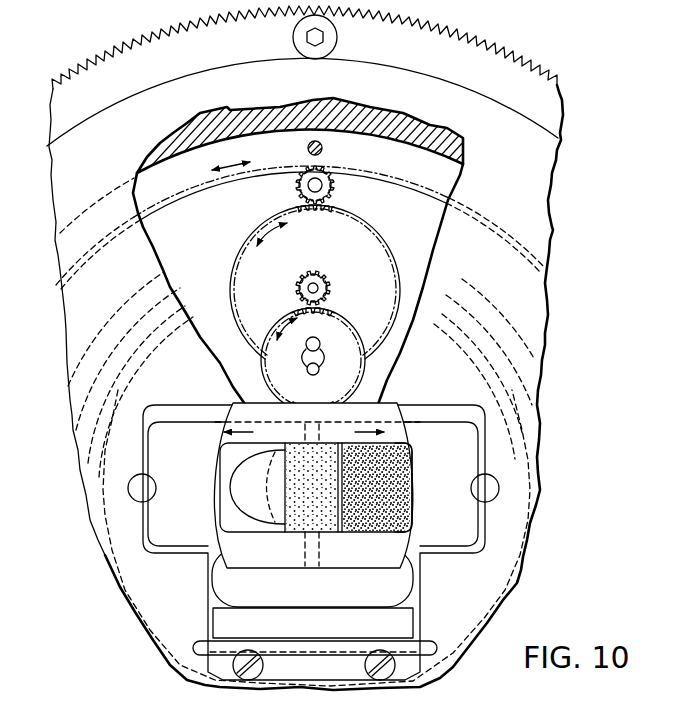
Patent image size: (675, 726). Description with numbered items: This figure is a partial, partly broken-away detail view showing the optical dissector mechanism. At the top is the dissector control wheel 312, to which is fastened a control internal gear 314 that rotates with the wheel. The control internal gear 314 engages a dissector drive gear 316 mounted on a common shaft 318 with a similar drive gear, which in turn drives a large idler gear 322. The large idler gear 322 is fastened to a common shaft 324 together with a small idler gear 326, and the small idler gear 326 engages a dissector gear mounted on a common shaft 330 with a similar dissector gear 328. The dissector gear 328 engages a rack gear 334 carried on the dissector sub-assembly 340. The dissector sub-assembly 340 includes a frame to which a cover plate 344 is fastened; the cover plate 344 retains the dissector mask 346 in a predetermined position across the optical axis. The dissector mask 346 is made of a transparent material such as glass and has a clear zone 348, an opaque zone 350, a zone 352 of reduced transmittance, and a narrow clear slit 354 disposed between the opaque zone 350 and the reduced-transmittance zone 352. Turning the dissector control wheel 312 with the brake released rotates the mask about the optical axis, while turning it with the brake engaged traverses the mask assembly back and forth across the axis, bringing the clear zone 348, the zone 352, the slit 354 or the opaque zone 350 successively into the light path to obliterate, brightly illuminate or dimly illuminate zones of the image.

The dissector control wheel 312 is at (262, 116).
The control internal gear 314 is at (407, 167).
The dissector drive gear 316 is at (336, 190).
The common shaft 318 is at (305, 187).
The large idler gear 322 is at (372, 245).
The common shaft 324 is at (308, 284).
The small idler gear 326 is at (323, 282).
The dissector gear 328 is at (350, 316).
The common shaft 330 is at (333, 333).
The rack gear 334 is at (367, 405).
The dissector sub-assembly 340 is at (406, 431).
The cover plate 344 is at (390, 412).
The dissector mask 346 is at (408, 458).
The clear zone 348 is at (237, 500).
The opaque zone 350 is at (395, 518).
The zone of reduced transmittance 352 is at (297, 522).
The clear slit 354 is at (345, 515).